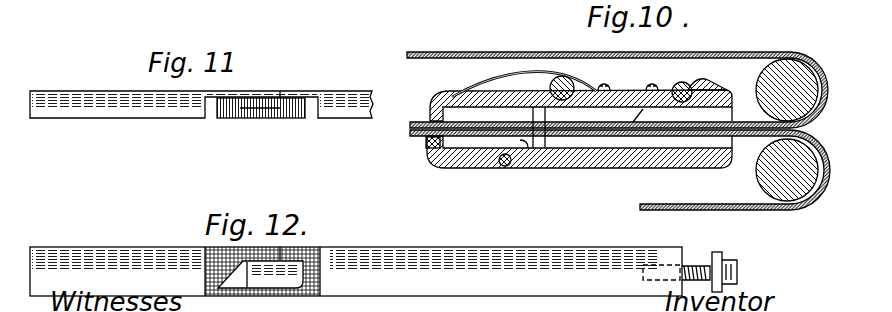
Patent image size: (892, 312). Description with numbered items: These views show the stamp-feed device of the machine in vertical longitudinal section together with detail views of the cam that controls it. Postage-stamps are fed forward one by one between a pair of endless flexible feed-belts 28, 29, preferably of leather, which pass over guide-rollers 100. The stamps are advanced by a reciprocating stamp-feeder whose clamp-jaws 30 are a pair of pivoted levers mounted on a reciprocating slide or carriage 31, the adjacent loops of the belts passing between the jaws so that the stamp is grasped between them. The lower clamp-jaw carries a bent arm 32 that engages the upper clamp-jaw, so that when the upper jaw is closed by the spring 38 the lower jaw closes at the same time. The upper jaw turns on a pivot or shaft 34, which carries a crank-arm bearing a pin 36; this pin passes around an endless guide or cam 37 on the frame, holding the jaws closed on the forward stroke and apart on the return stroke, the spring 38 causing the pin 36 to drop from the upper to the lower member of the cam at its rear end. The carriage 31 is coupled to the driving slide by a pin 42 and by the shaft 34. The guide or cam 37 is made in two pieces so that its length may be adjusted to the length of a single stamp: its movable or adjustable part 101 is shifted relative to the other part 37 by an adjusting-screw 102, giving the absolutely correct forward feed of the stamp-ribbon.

In FIG. 10, the feed-belt 28 is at (531, 53).
In FIG. 10, the feed-belt 29 is at (714, 136).
In FIG. 10, the guide-rollers 100 is at (797, 58).
In FIG. 10, the stamp-feeder clamp-jaws 30 is at (438, 99).
In FIG. 10, the pin 36 is at (428, 137).
In FIG. 10, the spring 38 is at (504, 78).
In FIG. 10, the pivot or shaft 34 is at (589, 80).
In FIG. 10, the bent arm 32 is at (548, 119).
In FIG. 10, the reciprocating slide or carriage 31 is at (657, 86).
In FIG. 10, the pin 42 is at (697, 86).
In FIG. 11, the movable or adjustable part 101 is at (310, 96).
In FIG. 12, the movable or adjustable part 101 is at (338, 258).
In FIG. 11, the endless guide or cam 37 is at (233, 106).
In FIG. 12, the endless guide or cam 37 is at (236, 272).
In FIG. 12, the adjusting-screw 102 is at (692, 268).